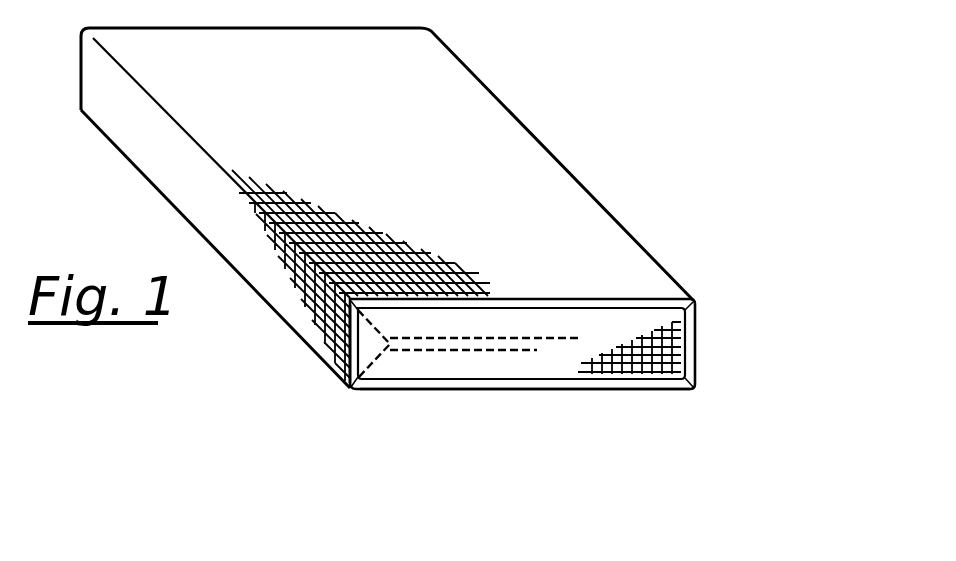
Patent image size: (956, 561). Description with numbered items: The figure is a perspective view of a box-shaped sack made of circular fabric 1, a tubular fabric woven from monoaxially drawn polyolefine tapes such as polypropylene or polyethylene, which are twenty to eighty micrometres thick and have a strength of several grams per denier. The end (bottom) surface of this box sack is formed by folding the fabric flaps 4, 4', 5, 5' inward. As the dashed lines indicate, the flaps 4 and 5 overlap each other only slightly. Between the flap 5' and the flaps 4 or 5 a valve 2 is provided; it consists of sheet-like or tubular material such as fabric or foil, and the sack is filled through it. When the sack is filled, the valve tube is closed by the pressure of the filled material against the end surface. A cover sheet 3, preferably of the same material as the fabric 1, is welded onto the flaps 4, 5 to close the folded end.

The circular fabric 1 is at (468, 120).
The valve 2 is at (345, 347).
The cover sheet 3 is at (483, 363).
The fabric flap 4 is at (522, 296).
The fabric flap 4' is at (676, 337).
The fabric flap 5 is at (525, 420).
The fabric flap 5' is at (315, 370).